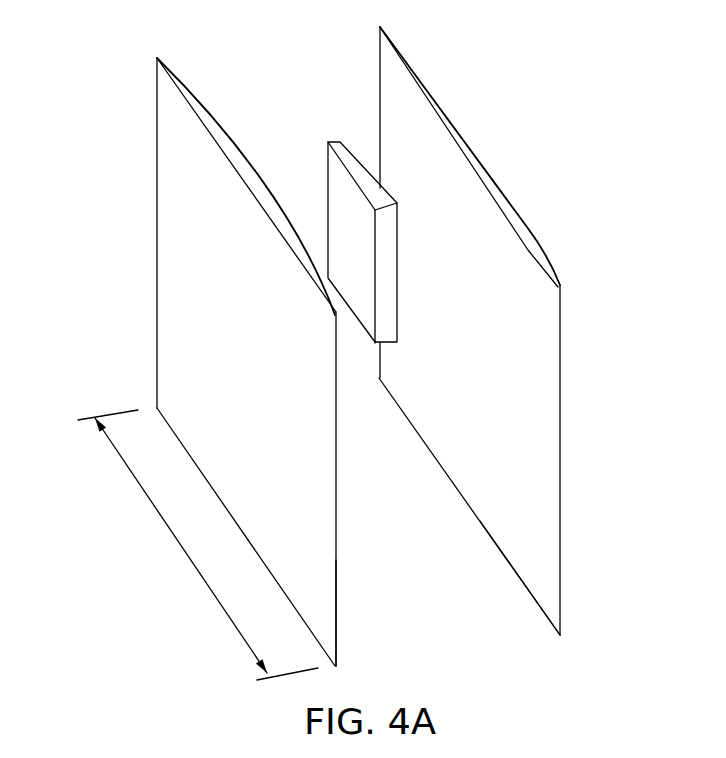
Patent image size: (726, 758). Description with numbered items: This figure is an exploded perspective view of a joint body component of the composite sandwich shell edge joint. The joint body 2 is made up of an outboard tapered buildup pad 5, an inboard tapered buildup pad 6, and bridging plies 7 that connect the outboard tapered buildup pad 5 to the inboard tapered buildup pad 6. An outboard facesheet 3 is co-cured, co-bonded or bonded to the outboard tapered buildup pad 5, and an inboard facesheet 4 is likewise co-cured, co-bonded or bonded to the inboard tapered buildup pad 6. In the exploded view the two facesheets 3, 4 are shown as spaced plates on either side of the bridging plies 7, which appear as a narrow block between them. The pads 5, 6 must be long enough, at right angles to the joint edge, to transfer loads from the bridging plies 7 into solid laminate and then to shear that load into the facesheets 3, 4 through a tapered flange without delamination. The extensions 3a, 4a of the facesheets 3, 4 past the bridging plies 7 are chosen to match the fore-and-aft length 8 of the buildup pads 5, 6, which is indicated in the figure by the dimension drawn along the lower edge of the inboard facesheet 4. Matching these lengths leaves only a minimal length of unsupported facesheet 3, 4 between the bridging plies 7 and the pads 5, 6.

The joint body 2 is at (128, 66).
The outboard facesheet 3 is at (460, 155).
The extension of outboard facesheet 3a is at (405, 63).
The inboard facesheet 4 is at (256, 166).
The extension of inboard facesheet 4a is at (199, 106).
The outboard tapered buildup pad 5 is at (540, 613).
The inboard tapered buildup pad 6 is at (337, 607).
The bridging plies 7 is at (350, 143).
The fore-and-aft length 8 is at (178, 543).